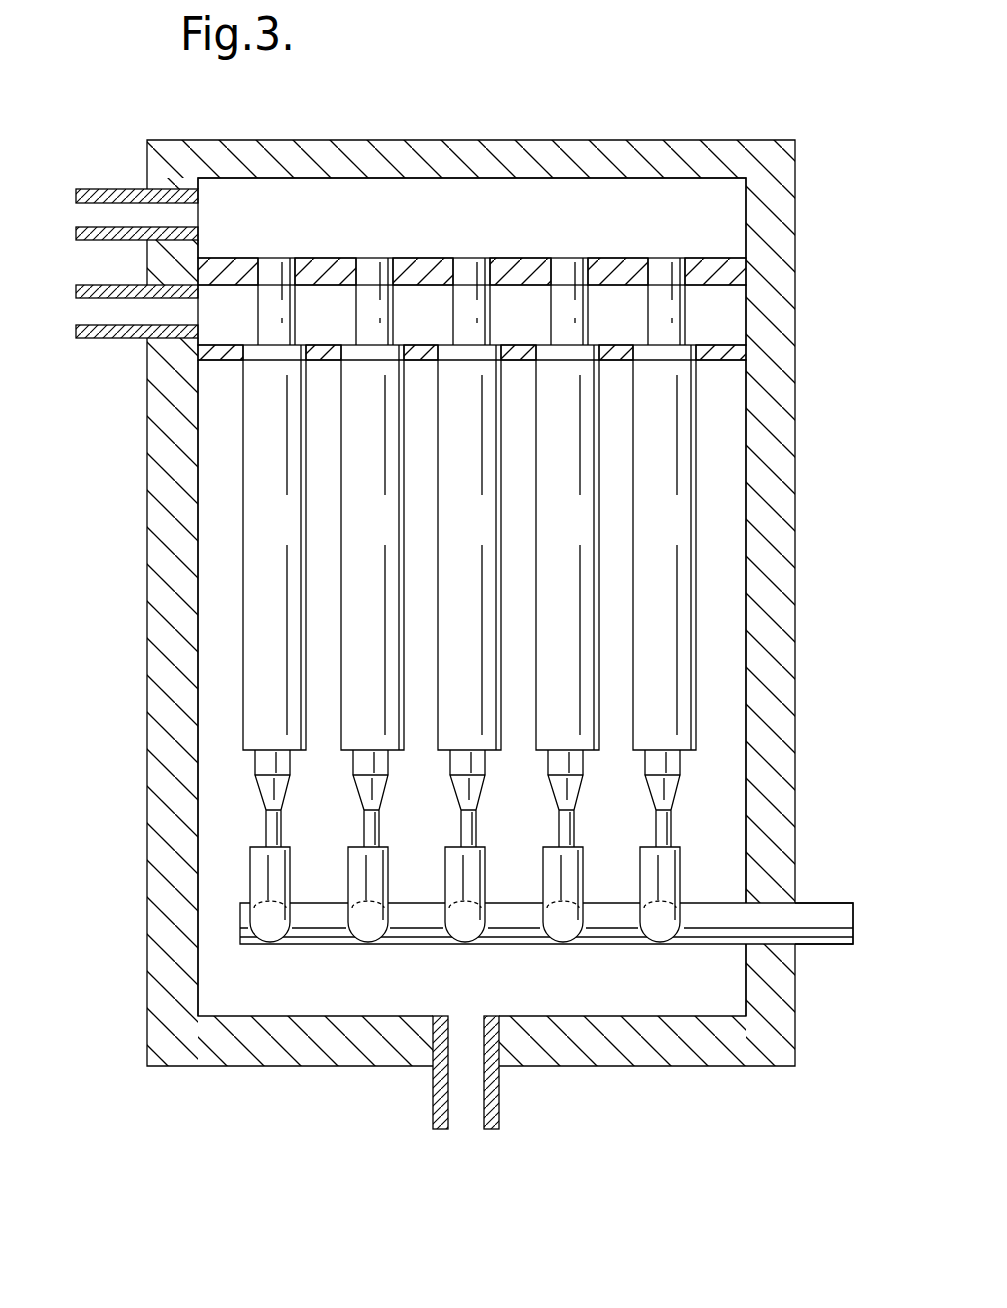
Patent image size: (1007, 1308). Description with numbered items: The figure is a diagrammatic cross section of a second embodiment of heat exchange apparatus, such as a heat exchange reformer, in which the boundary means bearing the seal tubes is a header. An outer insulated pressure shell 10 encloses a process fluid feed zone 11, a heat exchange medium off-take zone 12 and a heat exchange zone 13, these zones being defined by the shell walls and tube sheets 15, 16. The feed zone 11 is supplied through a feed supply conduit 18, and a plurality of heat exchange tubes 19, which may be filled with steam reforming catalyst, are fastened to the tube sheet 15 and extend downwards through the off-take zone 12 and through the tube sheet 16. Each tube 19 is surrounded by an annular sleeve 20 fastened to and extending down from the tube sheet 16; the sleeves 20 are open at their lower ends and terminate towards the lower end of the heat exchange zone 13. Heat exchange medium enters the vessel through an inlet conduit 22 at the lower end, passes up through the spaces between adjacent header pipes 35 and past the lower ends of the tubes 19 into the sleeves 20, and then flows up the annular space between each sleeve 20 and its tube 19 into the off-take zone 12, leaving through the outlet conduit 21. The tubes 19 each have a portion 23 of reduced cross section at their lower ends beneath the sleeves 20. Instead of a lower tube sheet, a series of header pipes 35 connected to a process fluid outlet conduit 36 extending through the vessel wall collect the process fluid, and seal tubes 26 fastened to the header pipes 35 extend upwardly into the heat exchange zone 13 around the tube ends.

The outer insulated pressure shell 10 is at (796, 578).
The process fluid feed zone 11 is at (702, 217).
The heat exchange medium off-take zone 12 is at (716, 327).
The heat exchange zone 13 is at (720, 718).
The tube sheet 15 is at (410, 262).
The tube sheet 16 is at (238, 340).
The feed supply conduit 18 is at (102, 188).
The heat exchange tubes 19 is at (273, 275).
The annular sleeve 20 is at (265, 525).
The heat exchange medium outlet conduit 21 is at (105, 340).
The heat exchange medium inlet conduit 22 is at (499, 1108).
The portion of reduced cross section 23 is at (267, 822).
The seal tubes 26 is at (250, 863).
The header pipes 35 is at (347, 926).
The process fluid outlet conduit 36 is at (822, 918).